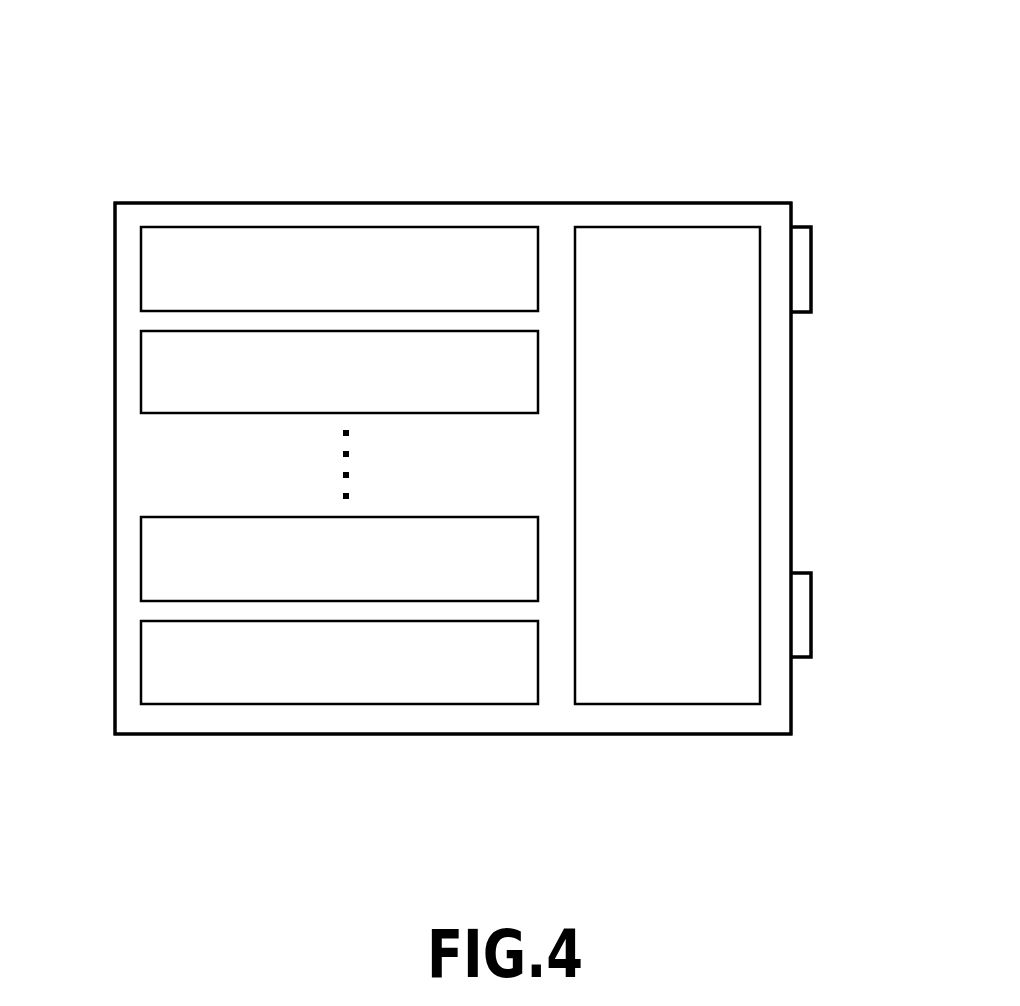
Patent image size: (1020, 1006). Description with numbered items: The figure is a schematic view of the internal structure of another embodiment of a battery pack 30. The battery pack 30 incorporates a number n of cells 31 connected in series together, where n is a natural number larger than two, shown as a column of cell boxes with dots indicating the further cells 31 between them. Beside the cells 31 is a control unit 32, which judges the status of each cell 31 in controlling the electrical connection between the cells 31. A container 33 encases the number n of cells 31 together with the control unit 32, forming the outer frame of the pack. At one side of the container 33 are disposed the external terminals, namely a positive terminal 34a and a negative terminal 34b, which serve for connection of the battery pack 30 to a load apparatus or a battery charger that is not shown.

The battery pack 30 is at (553, 149).
The cell 31 is at (141, 269).
The control unit 32 is at (757, 449).
The container 33 is at (792, 210).
The positive terminal 34a is at (813, 268).
The negative terminal 34b is at (813, 617).